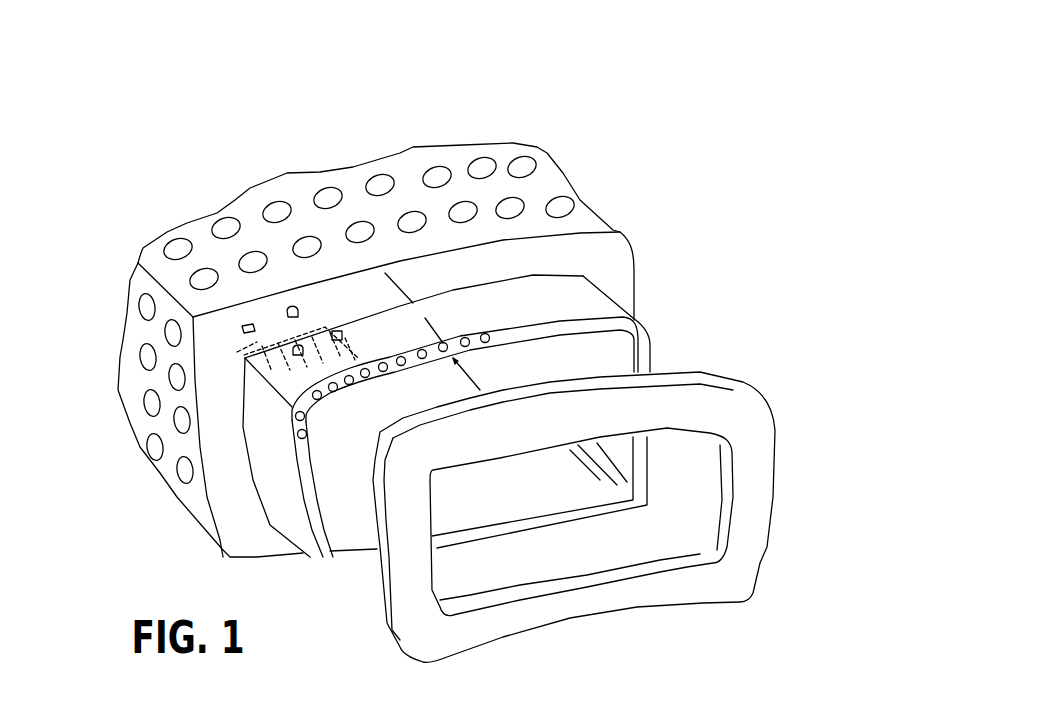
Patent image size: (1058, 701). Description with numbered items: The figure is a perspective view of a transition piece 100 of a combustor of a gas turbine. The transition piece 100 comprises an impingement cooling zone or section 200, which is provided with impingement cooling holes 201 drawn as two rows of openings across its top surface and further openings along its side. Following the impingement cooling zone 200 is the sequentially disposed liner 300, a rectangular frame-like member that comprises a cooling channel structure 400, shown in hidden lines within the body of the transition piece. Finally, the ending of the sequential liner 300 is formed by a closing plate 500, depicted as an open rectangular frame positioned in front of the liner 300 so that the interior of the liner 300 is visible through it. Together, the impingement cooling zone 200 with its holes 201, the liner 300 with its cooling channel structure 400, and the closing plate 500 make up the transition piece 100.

The transition piece 100 is at (637, 102).
The impingement cooling zone 200 is at (543, 185).
The impingement cooling holes 201 is at (548, 207).
The sequential liner 300 is at (577, 302).
The cooling channel structure 400 is at (400, 307).
The closing plate 500 is at (743, 548).